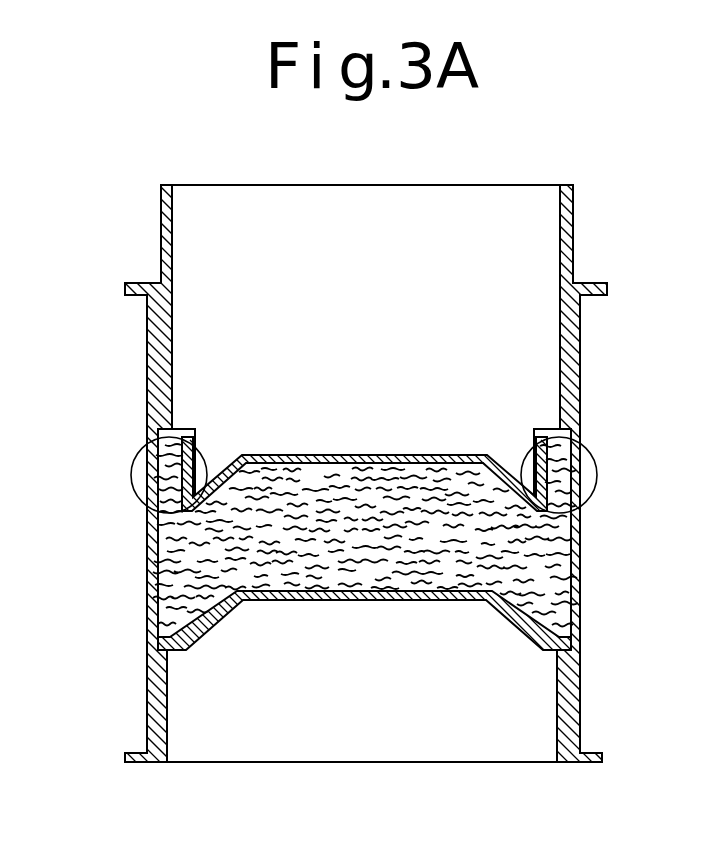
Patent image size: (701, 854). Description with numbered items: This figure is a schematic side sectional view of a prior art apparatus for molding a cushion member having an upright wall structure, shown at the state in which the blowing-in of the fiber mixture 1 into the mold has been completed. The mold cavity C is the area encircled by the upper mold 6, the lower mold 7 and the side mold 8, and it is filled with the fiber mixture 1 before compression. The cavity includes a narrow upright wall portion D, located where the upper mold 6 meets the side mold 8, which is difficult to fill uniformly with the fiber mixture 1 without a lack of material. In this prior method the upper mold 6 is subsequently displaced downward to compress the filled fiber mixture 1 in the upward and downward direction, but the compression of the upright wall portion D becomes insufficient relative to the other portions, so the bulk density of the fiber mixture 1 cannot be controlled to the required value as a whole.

The fiber mixture 1 is at (272, 497).
The upper mold 6 is at (365, 455).
The lower mold 7 is at (298, 600).
The side mold 8 is at (580, 348).
The mold cavity C is at (178, 549).
The upright wall portion D is at (126, 490).